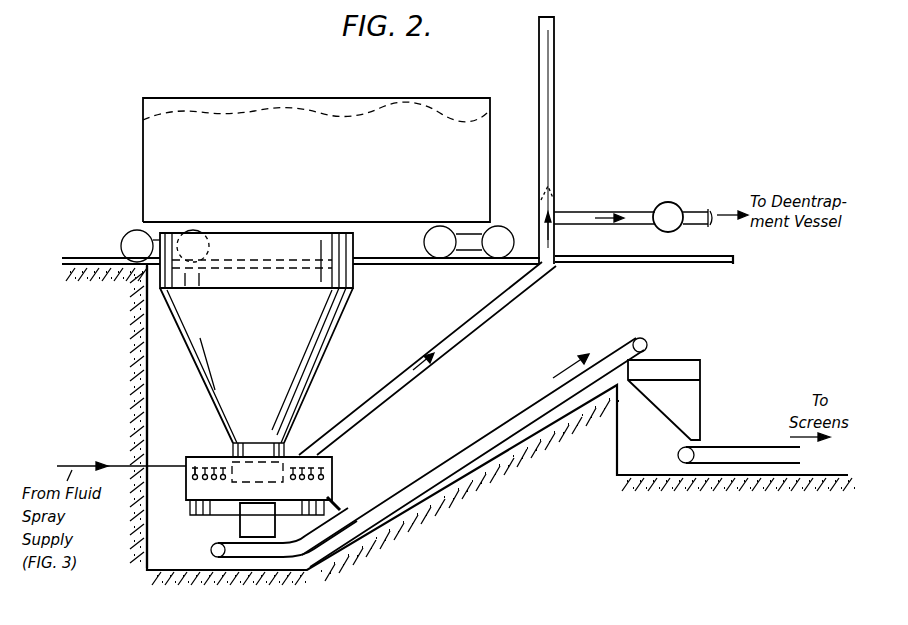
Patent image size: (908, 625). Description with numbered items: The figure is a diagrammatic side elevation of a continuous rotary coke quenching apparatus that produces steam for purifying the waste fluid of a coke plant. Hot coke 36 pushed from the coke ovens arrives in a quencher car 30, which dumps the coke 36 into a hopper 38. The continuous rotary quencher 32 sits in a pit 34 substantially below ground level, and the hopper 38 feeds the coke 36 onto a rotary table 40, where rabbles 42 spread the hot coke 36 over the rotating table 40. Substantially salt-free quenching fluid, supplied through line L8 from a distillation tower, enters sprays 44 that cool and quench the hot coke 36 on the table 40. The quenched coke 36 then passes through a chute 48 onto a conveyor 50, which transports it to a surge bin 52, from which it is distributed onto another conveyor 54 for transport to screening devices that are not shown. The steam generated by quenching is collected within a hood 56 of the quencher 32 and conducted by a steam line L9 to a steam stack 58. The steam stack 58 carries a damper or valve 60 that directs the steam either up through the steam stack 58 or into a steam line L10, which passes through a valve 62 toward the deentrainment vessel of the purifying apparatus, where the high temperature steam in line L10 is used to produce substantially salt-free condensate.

The quencher car 30 is at (326, 169).
The continuous rotary quencher 32 is at (214, 516).
The pit 34 is at (148, 382).
The coke 36 is at (431, 112).
The hopper 38 is at (329, 348).
The rotary table 40 is at (302, 517).
The rabbles 42 is at (275, 462).
The sprays 44 is at (196, 478).
The chute 48 is at (331, 503).
The conveyor 50 is at (518, 403).
The surge bin 52 is at (700, 364).
The conveyor 54 is at (728, 447).
The hood 56 is at (206, 456).
The steam stack 58 is at (556, 71).
The damper or valve 60 is at (551, 188).
The valve 62 is at (678, 203).
The line L8 is at (160, 463).
The steam line L9 is at (503, 298).
The steam line L10 is at (608, 208).